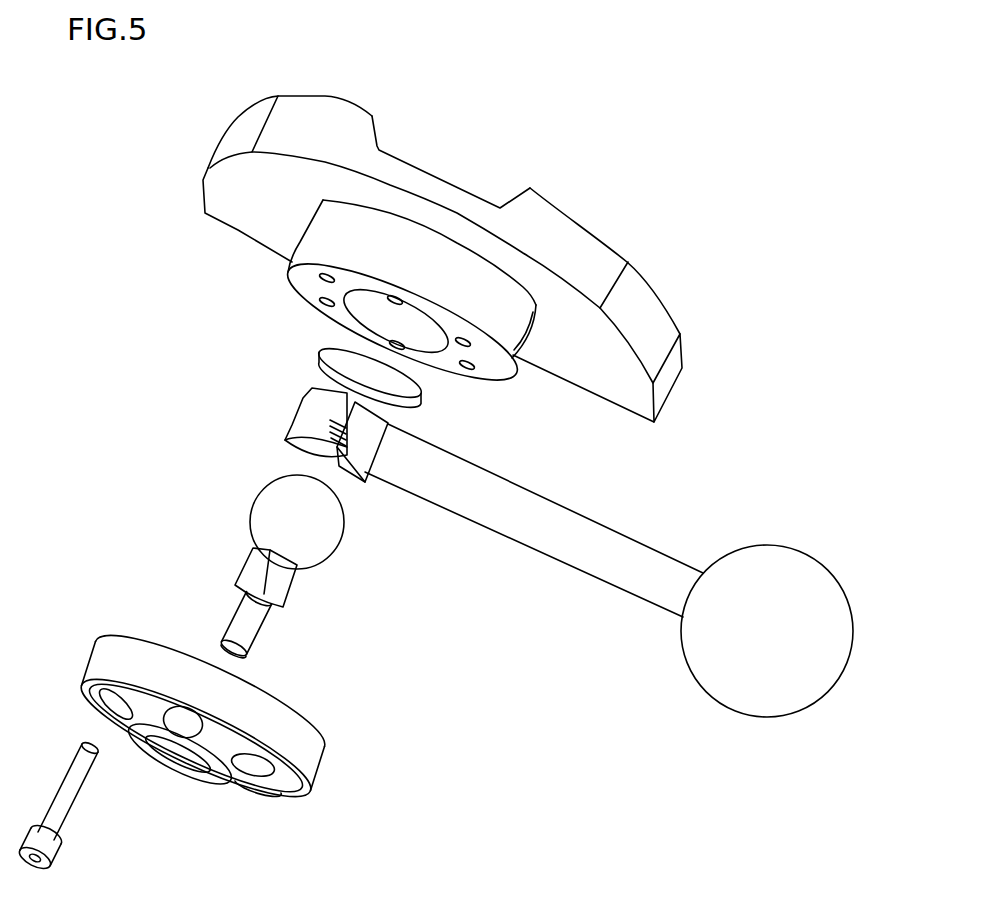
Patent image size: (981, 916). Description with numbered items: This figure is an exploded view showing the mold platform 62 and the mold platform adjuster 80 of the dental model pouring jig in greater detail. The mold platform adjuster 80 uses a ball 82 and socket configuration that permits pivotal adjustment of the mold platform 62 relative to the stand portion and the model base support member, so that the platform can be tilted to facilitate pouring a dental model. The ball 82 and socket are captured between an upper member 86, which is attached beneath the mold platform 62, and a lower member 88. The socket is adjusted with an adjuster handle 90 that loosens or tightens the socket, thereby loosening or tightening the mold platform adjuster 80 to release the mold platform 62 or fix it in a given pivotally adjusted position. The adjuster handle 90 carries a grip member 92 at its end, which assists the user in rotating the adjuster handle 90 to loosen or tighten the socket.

The mold platform 62 is at (652, 312).
The mold platform adjuster 80 is at (243, 367).
The ball 82 is at (260, 513).
The upper member 86 is at (302, 254).
The lower member 88 is at (110, 657).
The adjuster handle 90 is at (587, 532).
The grip member 92 is at (803, 575).